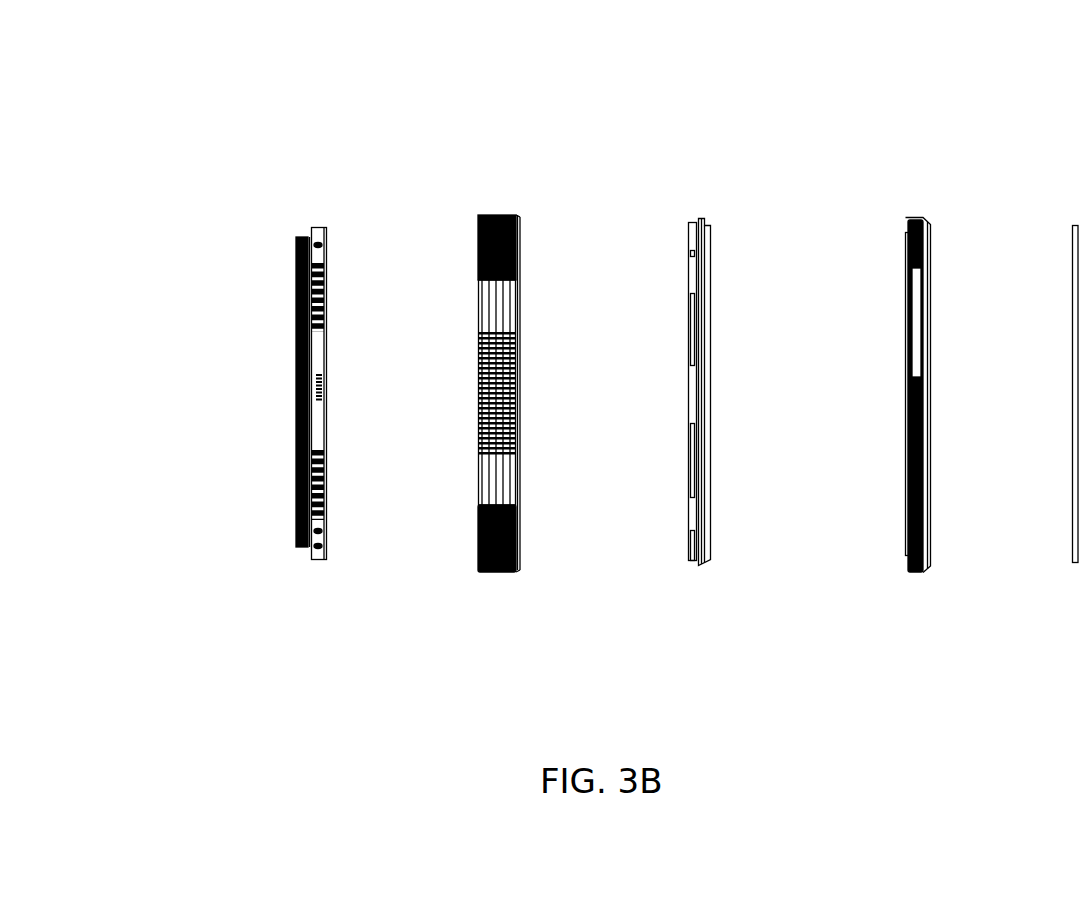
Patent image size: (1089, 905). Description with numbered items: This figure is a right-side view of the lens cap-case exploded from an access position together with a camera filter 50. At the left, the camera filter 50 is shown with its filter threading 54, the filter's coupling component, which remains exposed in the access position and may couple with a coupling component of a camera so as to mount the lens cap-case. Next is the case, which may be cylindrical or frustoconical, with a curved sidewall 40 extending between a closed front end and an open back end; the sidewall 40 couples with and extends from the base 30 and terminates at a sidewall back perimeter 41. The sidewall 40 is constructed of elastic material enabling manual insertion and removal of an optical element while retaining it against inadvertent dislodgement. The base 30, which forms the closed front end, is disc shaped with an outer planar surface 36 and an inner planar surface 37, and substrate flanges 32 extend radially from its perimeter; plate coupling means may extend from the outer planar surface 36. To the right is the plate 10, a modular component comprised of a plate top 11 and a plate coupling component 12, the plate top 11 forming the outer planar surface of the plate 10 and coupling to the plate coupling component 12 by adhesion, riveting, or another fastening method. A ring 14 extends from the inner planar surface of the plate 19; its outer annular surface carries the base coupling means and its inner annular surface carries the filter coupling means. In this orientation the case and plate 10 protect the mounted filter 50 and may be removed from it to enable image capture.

The plate 10 is at (962, 603).
The plate top 11 is at (862, 349).
The plate coupling component 12 is at (1072, 225).
The ring 14 is at (903, 525).
The inner planar surface of the plate 19 is at (881, 329).
The base 30 is at (689, 366).
The substrate flanges 32 is at (688, 569).
The outer planar surface 36 is at (712, 267).
The inner planar surface 37 is at (688, 400).
The sidewall 40 is at (449, 359).
The sidewall back perimeter 41 is at (478, 572).
The camera filter 50 is at (236, 305).
The filter threading 54 is at (294, 335).